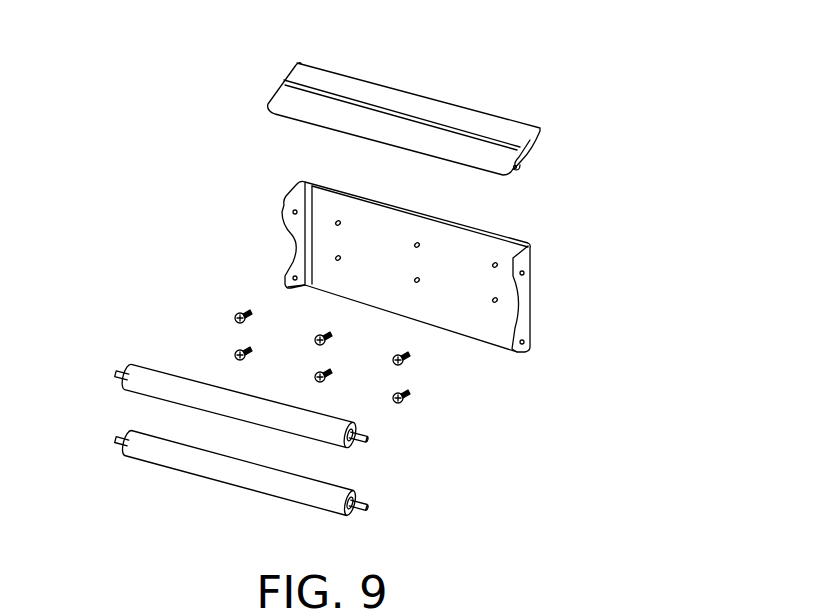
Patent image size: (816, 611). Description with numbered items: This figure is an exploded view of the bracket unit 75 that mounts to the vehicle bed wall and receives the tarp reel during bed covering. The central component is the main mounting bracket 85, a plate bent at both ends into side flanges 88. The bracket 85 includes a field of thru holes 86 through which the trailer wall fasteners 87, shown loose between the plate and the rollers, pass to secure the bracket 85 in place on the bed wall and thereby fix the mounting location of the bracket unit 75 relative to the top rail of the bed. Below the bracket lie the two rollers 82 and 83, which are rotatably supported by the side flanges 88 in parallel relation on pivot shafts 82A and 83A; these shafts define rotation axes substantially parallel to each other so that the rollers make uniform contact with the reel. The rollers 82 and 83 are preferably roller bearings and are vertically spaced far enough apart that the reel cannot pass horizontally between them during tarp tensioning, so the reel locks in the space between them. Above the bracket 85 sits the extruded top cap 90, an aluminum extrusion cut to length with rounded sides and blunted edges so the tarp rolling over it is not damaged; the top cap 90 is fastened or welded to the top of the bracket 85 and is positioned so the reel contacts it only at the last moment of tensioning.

The bracket unit 75 is at (135, 140).
The extruded top cap 90 is at (388, 98).
The main mounting bracket 85 is at (532, 287).
The thru holes 86 is at (472, 245).
The side flanges 88 is at (290, 260).
The trailer wall fasteners 87 is at (403, 398).
The roller 83 is at (143, 372).
The pivot shaft 83A is at (120, 378).
The roller 82 is at (220, 475).
The pivot shaft 82A is at (118, 447).